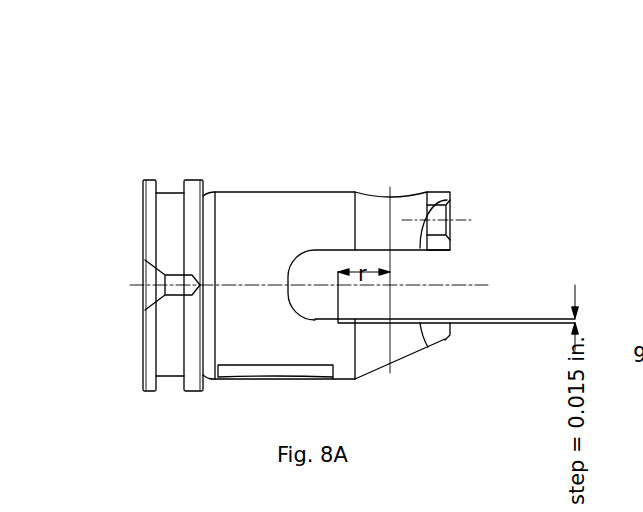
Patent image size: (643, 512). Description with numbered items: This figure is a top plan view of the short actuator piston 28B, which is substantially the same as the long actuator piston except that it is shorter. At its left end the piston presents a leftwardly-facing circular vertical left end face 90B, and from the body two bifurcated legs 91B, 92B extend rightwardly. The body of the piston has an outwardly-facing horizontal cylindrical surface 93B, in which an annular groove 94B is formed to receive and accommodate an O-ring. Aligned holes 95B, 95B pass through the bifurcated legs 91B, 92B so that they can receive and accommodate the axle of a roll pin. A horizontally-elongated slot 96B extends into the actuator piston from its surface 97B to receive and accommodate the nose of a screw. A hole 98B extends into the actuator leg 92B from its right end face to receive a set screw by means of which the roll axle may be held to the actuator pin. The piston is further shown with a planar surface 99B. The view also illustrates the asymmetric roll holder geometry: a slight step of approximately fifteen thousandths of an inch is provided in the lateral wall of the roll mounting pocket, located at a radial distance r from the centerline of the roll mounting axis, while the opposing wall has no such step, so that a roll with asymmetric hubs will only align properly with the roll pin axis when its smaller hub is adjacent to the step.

The short actuator piston 28B is at (318, 133).
The left end face 90B is at (142, 352).
The bifurcated leg 91B is at (445, 343).
The bifurcated leg 92B is at (443, 197).
The cylindrical surface 93B is at (148, 175).
The annular groove 94B is at (175, 380).
The aligned holes 95B is at (397, 205).
The horizontally-elongated slot 96B is at (275, 377).
The surface 97B is at (260, 215).
The hole 98B is at (450, 220).
The planar surface 99B is at (380, 370).